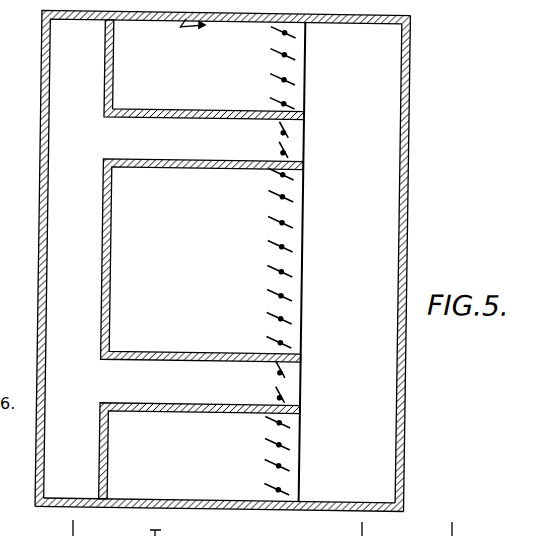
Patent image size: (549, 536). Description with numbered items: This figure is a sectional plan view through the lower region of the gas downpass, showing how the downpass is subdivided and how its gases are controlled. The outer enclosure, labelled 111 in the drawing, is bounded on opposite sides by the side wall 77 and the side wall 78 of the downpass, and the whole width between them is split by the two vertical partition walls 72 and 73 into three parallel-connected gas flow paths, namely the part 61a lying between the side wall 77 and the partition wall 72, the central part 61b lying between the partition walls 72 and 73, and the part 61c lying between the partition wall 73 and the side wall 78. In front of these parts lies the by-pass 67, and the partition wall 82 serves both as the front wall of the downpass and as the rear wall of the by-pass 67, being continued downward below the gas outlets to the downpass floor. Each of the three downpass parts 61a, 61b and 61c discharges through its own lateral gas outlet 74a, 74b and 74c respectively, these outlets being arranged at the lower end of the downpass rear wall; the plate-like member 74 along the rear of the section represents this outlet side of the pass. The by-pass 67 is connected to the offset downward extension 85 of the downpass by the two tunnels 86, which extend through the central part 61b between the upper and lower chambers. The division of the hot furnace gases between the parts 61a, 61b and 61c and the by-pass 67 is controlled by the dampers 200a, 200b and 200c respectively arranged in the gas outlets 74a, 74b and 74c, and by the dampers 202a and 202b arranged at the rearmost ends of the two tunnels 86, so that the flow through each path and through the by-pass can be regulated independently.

The housing wall 111 is at (41, 228).
The offset downward extension of the downpass 85 is at (408, 254).
The side wall of the downpass 78 is at (250, 510).
The vertical partition wall 72 is at (198, 110).
The partition wall 82 is at (104, 200).
The vertical partition wall 73 is at (162, 408).
The by-pass 67 is at (85, 324).
The tunnels 86 is at (178, 144).
The first part of the downpass 61a is at (219, 77).
The central part of the downpass 61b is at (210, 264).
The third part of the downpass 61c is at (216, 474).
The plate 74 is at (295, 403).
The lateral gas outlet 74a is at (293, 93).
The lateral gas outlet 74b is at (292, 247).
The lateral gas outlet 74c is at (295, 463).
The damper 200a is at (290, 84).
The damper 200b is at (288, 225).
The damper 200c is at (290, 449).
The damper 202a is at (288, 155).
The damper 202b is at (287, 403).
The side wall of the downpass 77 is at (206, 51).